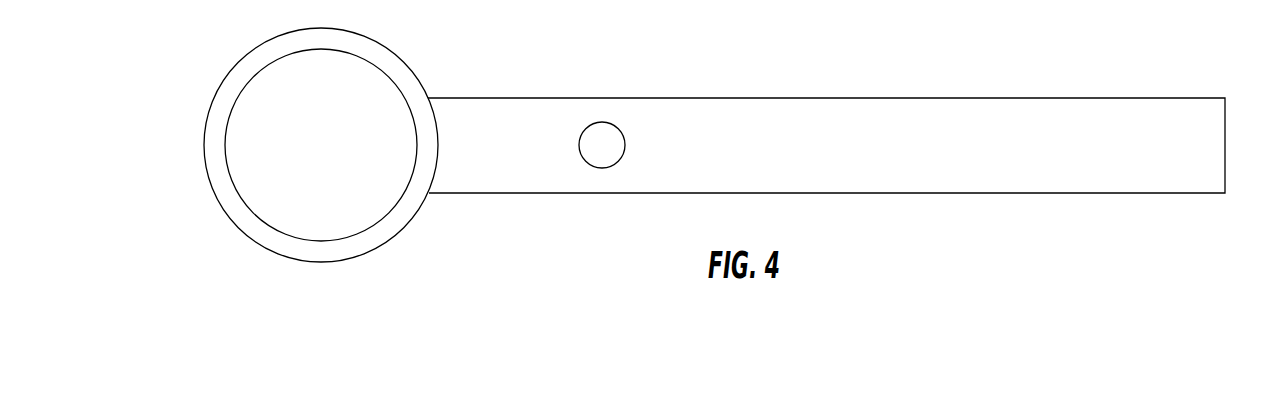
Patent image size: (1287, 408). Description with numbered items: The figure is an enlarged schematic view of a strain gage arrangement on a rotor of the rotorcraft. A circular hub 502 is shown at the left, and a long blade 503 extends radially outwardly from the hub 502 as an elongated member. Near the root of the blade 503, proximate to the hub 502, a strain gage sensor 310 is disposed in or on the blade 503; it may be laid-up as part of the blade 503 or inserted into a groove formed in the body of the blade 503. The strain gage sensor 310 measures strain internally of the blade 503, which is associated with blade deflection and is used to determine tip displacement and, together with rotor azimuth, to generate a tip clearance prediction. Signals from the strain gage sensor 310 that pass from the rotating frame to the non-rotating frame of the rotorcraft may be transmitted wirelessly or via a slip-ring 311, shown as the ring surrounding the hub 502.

The hub 502 is at (208, 112).
The slip-ring 311 is at (234, 186).
The blades 503 is at (1002, 98).
The strain gage sensors 310 is at (600, 121).